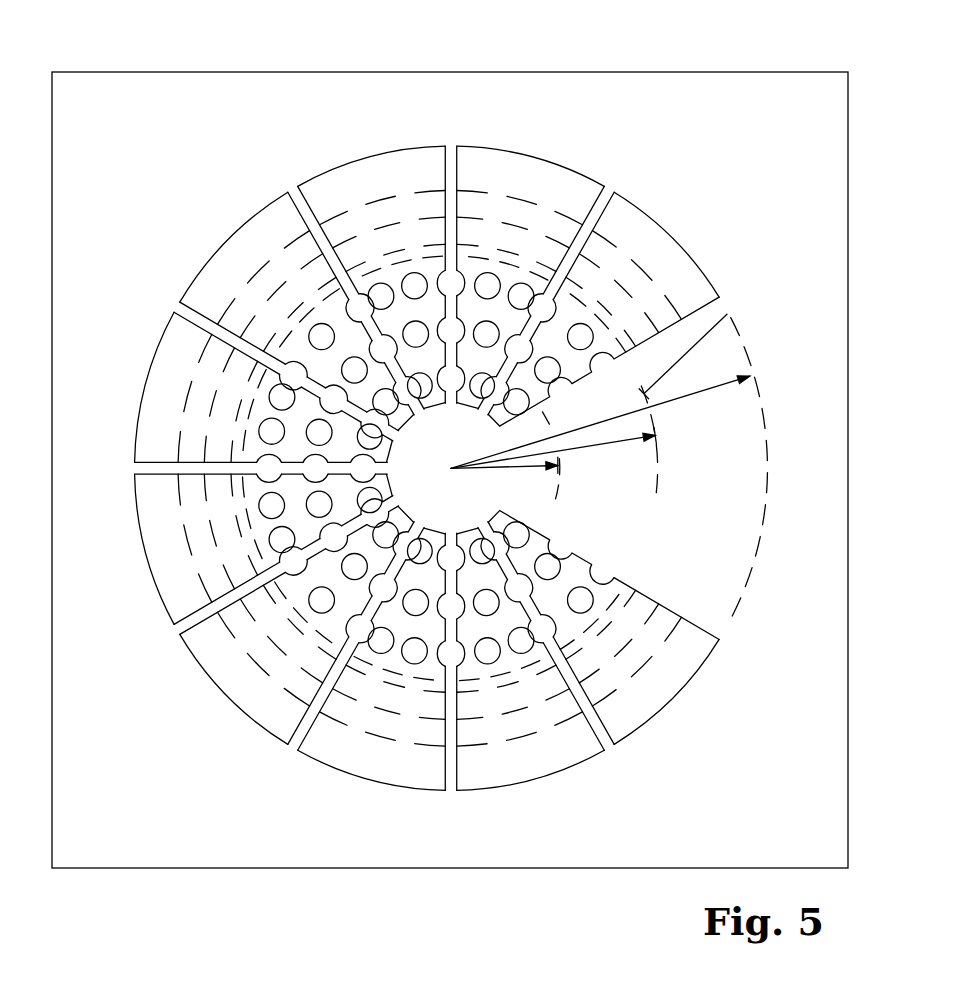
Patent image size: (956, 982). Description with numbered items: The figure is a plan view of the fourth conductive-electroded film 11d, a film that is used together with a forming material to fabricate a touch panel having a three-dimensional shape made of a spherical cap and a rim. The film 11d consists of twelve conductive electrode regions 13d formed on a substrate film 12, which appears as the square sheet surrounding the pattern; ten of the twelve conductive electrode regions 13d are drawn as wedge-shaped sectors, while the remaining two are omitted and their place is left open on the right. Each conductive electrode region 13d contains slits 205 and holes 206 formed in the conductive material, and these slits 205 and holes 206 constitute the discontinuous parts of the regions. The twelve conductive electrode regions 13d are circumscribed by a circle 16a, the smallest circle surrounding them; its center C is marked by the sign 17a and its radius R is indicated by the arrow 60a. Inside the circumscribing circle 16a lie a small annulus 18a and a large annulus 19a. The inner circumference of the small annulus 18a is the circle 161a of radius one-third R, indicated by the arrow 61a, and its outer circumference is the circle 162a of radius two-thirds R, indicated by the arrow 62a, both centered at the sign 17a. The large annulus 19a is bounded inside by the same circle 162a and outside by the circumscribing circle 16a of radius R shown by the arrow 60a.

The fourth conductive-electroded film 11d is at (405, 60).
The substrate film 12 is at (172, 842).
The conductive electrode regions 13d is at (707, 651).
The circle 16a is at (752, 352).
The circle 161a is at (730, 316).
The circle 162a is at (738, 338).
The sign 17a is at (449, 466).
The small annulus 18a is at (622, 550).
The large annulus 19a is at (703, 593).
The arrow 60a is at (703, 395).
The arrow 61a is at (553, 474).
The arrow 62a is at (617, 443).
The slits 205 is at (645, 667).
The holes 206 is at (585, 610).